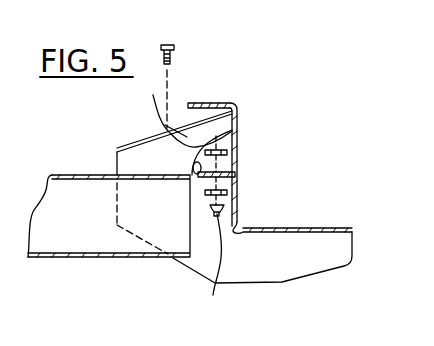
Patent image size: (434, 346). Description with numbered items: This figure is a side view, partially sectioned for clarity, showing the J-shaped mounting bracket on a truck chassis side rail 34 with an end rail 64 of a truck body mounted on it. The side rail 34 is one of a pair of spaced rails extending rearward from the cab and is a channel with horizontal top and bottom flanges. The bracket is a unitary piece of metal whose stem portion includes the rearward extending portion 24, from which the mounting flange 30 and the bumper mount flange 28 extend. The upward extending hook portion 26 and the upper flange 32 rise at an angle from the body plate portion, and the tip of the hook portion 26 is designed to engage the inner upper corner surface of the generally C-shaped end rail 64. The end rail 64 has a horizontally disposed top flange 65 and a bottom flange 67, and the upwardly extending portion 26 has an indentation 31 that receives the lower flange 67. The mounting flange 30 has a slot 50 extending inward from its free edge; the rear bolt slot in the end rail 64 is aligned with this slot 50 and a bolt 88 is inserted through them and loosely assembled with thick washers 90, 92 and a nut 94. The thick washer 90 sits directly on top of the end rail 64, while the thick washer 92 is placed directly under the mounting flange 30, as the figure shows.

The rearward extending portion 24 is at (310, 252).
The upward extending hook portion 26 is at (127, 162).
The bumper mount flange 28 is at (302, 228).
The mounting flange 30 is at (236, 177).
The indentation 31 is at (180, 113).
The upper flange 32 is at (152, 140).
The side rail 34 is at (78, 238).
The slot 50 is at (192, 175).
The end rail 64 is at (240, 118).
The top flange 65 is at (212, 102).
The bottom flange 67 is at (236, 168).
The bolt 88 is at (172, 44).
The thick washer 90 is at (228, 148).
The thick washer 92 is at (232, 196).
The nut 94 is at (234, 277).